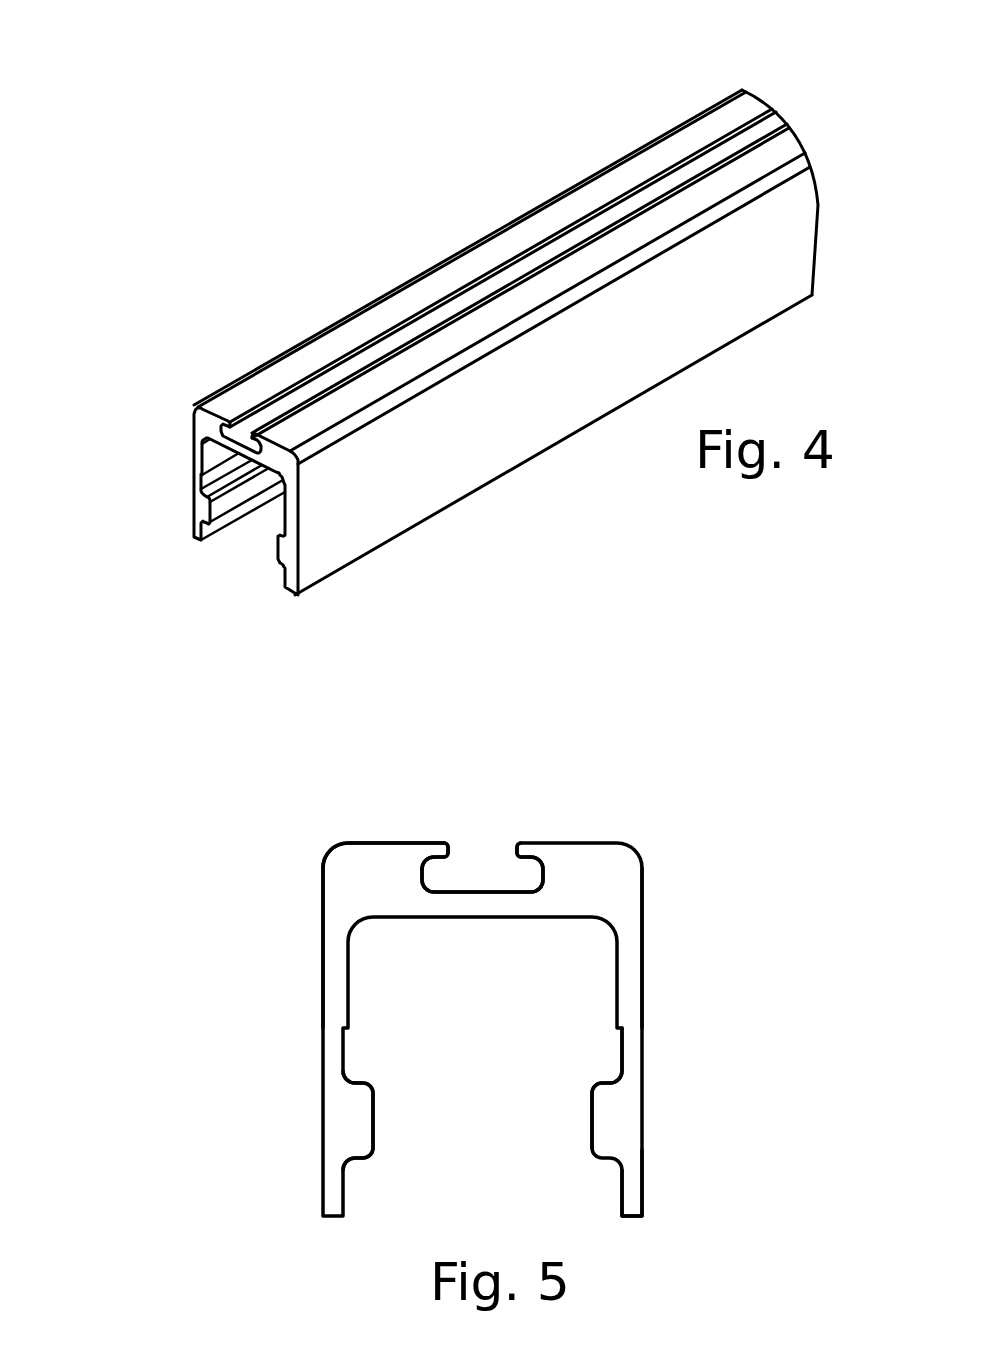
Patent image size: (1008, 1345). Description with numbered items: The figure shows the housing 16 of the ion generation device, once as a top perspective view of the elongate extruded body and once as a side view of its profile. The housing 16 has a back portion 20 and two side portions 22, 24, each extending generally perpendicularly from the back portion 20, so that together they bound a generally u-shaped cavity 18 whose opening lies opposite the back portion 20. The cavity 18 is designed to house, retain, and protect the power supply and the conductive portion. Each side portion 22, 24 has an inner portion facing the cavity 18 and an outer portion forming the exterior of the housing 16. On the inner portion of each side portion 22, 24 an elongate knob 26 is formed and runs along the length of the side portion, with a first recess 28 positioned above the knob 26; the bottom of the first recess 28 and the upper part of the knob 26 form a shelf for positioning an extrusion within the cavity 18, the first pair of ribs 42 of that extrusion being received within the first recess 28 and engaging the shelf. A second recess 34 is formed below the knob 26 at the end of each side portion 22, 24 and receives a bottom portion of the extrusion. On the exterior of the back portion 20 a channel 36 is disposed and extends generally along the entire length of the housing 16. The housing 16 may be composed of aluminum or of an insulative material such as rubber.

In FIG. 4, the housing 16 is at (480, 162).
In FIG. 5, the housing 16 is at (700, 760).
In FIG. 4, the cavity 18 is at (240, 552).
In FIG. 4, the back portion 20 is at (746, 108).
In FIG. 5, the back portion 20 is at (381, 855).
In FIG. 4, the side portion 22 is at (403, 503).
In FIG. 5, the side portion 22 is at (628, 1005).
In FIG. 5, the side portion 24 is at (318, 966).
In FIG. 5, the elongate knob 26 is at (598, 1128).
In FIG. 5, the first recess 28 is at (360, 1097).
In FIG. 5, the second recess 34 is at (628, 1203).
In FIG. 4, the channel 36 is at (278, 412).
In FIG. 5, the channel 36 is at (475, 875).
In FIG. 4, the first pair of ribs 42 is at (208, 458).